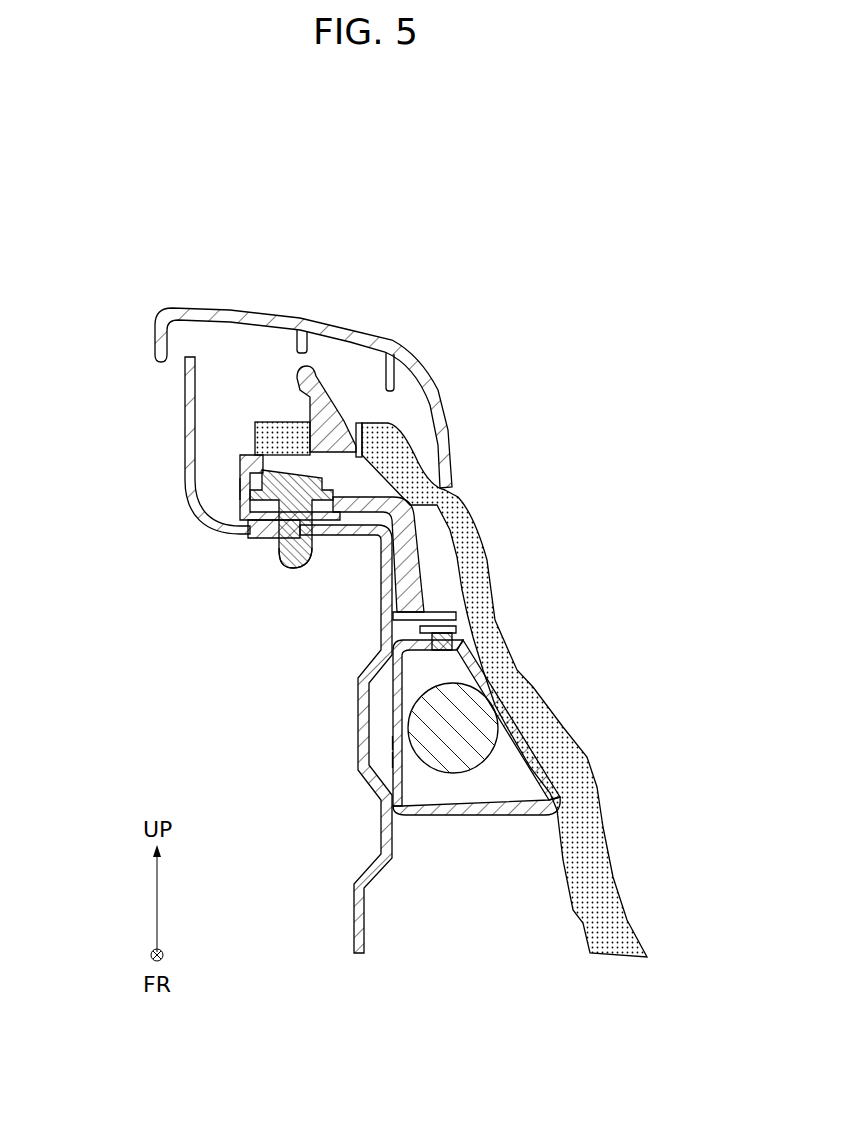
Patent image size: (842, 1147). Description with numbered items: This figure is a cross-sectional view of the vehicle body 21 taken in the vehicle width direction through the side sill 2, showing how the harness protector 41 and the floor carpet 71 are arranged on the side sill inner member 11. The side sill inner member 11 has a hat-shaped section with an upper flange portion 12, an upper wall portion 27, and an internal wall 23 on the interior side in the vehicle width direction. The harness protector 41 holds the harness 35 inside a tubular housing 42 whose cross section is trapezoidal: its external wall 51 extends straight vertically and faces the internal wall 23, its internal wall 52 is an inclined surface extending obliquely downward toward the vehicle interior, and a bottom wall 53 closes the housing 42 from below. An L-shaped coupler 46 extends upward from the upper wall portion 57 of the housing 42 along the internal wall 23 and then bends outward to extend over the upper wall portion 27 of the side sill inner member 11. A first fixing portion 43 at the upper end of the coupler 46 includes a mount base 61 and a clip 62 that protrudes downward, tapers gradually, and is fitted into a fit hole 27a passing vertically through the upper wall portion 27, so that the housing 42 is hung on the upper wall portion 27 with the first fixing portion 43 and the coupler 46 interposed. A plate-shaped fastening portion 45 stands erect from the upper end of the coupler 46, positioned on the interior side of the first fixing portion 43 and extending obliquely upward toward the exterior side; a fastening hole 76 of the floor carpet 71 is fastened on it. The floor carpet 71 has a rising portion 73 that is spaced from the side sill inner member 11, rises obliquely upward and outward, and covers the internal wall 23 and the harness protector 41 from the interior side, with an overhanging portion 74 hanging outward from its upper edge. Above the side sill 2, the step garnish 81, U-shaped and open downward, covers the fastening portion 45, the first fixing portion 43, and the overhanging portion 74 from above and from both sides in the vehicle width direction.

The side sill 2 is at (216, 502).
The side sill inner member 11 is at (174, 463).
The upper flange portion 12 is at (186, 382).
The vehicle body 21 is at (656, 337).
The internal wall 23 is at (378, 830).
The upper wall portion 27 is at (257, 527).
The fit hole 27a is at (294, 569).
The harness 35 is at (481, 700).
The harness protector 41 is at (385, 743).
The housing 42 is at (385, 760).
The first fixing portion 43 is at (224, 488).
The fastening portion 45 is at (307, 368).
The coupler 46 is at (413, 542).
The external wall 51 is at (390, 727).
The internal wall (first slope portion) 52 is at (511, 727).
The bottom wall 53 is at (482, 821).
The upper wall portion 57 is at (430, 648).
The mount base 61 is at (283, 465).
The clip 62 is at (275, 548).
The floor carpet 71 is at (607, 773).
The rising portion 73 is at (614, 870).
The overhanging portion 74 is at (283, 417).
The fastening hole 76 is at (354, 436).
The step garnish 81 is at (402, 337).